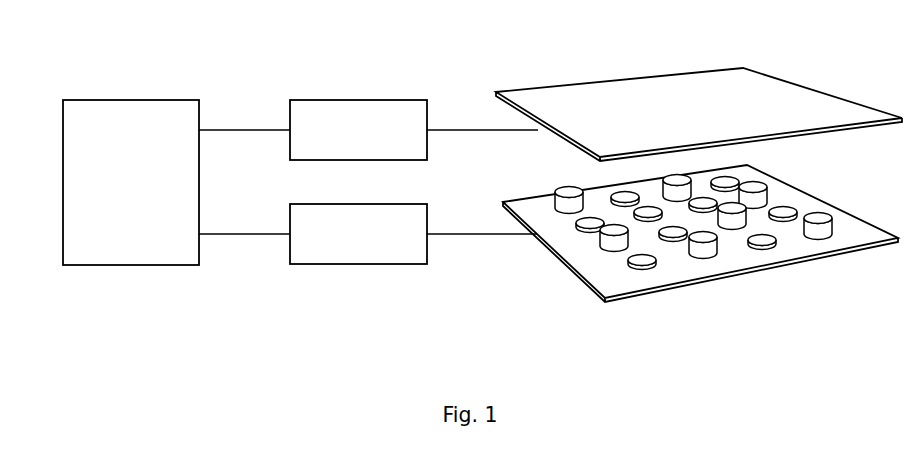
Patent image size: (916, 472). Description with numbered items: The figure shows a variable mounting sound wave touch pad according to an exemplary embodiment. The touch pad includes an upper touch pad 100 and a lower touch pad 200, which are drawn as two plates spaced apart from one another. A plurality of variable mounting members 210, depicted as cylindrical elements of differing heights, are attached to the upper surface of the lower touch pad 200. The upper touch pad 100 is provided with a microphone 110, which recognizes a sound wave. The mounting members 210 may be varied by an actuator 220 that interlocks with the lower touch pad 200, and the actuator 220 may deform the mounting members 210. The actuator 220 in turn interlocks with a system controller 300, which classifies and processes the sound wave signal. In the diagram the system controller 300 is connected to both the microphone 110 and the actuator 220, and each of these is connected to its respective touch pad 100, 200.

The upper touch pad 100 is at (743, 68).
The microphone 110 is at (358, 100).
The lower touch pad 200 is at (752, 276).
The variable mounting member 210 is at (818, 213).
The actuator 220 is at (358, 264).
The system controller 300 is at (130, 100).